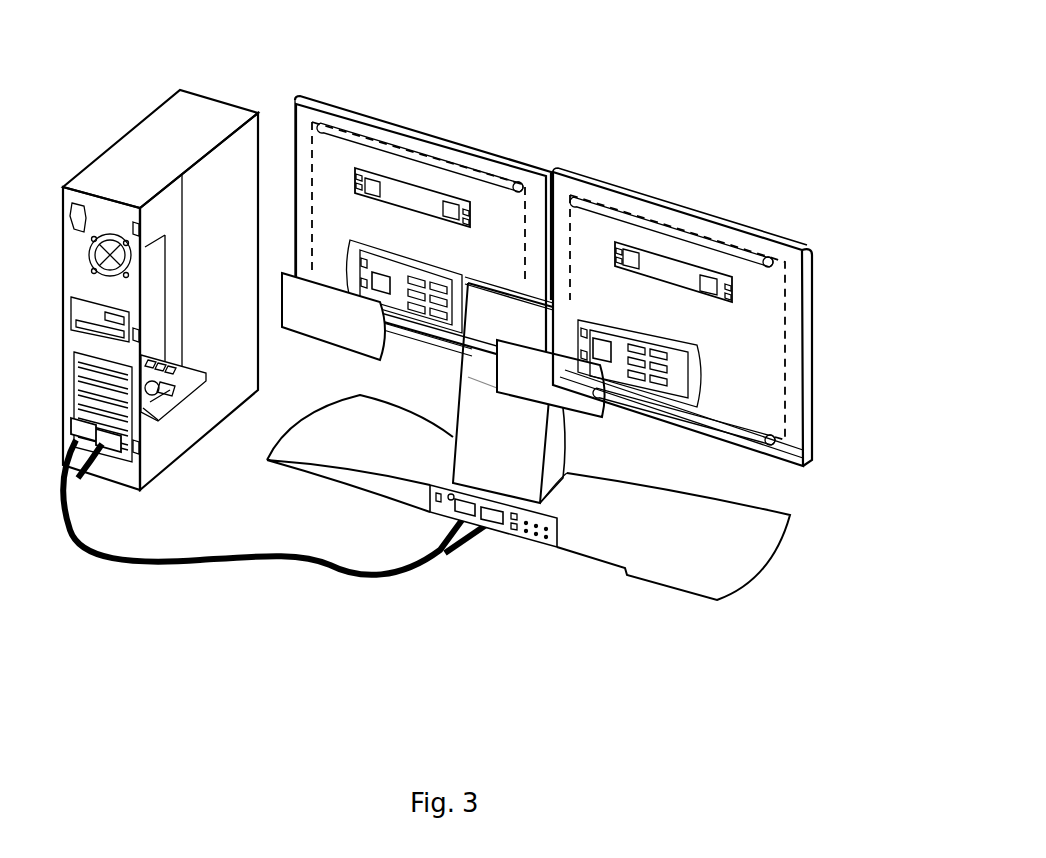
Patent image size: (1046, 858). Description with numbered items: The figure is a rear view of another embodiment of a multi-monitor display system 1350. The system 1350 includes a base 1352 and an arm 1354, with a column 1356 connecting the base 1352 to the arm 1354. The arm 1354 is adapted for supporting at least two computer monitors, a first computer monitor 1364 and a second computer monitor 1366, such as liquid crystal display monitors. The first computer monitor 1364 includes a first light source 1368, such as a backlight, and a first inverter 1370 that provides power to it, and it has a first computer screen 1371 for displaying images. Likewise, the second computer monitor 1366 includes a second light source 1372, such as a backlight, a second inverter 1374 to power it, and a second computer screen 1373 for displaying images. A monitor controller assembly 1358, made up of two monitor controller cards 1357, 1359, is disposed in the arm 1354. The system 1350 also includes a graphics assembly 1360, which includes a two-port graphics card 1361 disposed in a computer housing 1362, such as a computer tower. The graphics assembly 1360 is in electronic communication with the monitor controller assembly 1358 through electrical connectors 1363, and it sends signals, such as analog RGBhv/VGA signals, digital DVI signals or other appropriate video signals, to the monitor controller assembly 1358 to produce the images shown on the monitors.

The multi-monitor display system 1350 is at (636, 71).
The base 1352 is at (692, 542).
The arm 1354 is at (700, 358).
The column 1356 is at (553, 455).
The monitor controller card 1357 is at (657, 352).
The monitor controller assembly 1358 is at (436, 281).
The monitor controller card 1359 is at (398, 272).
The graphics assembly 1360 is at (172, 388).
The two-port graphics card 1361 is at (190, 372).
The computer housing 1362 is at (176, 112).
The electrical connectors 1363 is at (178, 583).
The first computer monitor 1364 is at (816, 295).
The second computer monitor 1366 is at (291, 109).
The first light source 1368 is at (705, 242).
The first inverter 1370 is at (655, 268).
The first computer screen 1371 is at (782, 262).
The second light source 1372 is at (497, 178).
The second computer screen 1373 is at (333, 153).
The second inverter 1374 is at (425, 200).